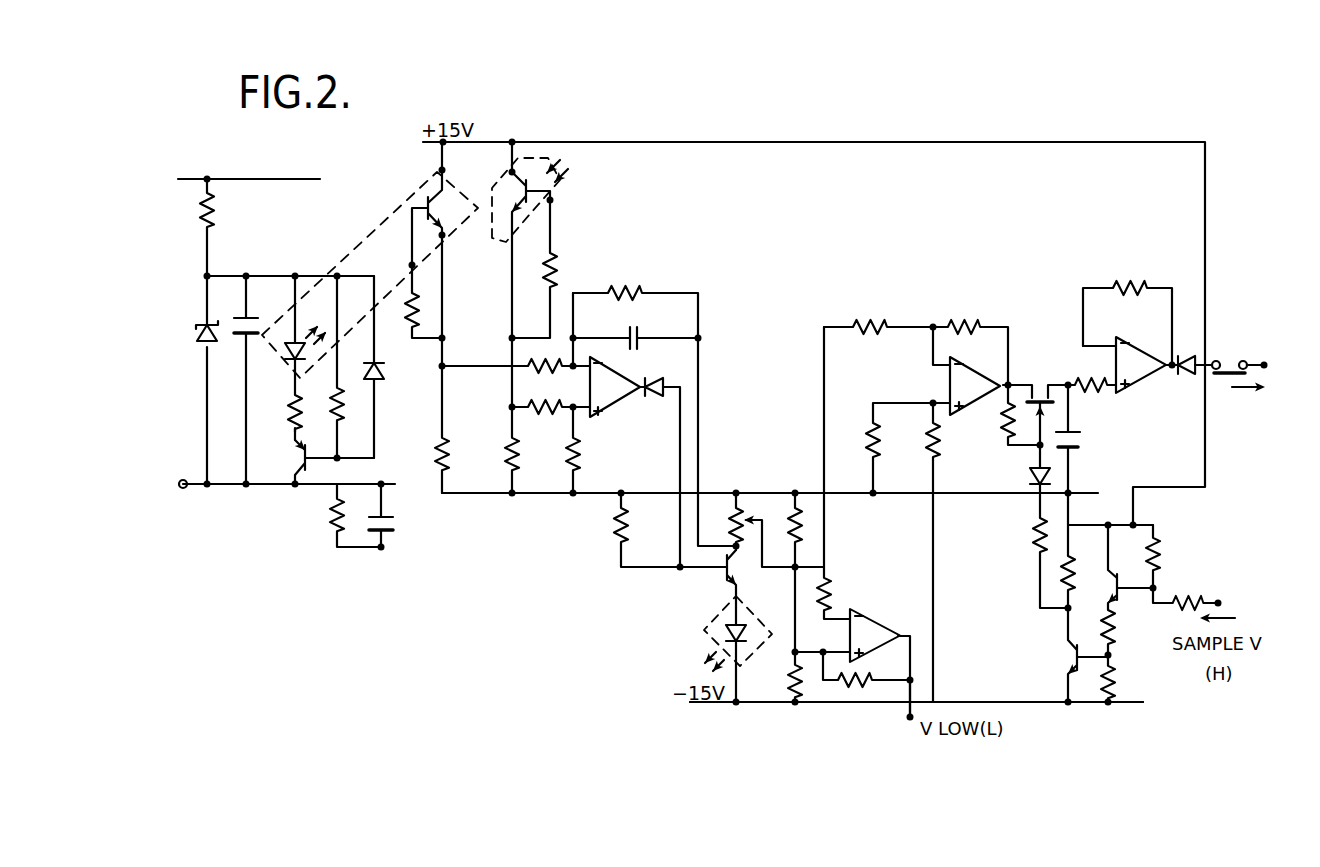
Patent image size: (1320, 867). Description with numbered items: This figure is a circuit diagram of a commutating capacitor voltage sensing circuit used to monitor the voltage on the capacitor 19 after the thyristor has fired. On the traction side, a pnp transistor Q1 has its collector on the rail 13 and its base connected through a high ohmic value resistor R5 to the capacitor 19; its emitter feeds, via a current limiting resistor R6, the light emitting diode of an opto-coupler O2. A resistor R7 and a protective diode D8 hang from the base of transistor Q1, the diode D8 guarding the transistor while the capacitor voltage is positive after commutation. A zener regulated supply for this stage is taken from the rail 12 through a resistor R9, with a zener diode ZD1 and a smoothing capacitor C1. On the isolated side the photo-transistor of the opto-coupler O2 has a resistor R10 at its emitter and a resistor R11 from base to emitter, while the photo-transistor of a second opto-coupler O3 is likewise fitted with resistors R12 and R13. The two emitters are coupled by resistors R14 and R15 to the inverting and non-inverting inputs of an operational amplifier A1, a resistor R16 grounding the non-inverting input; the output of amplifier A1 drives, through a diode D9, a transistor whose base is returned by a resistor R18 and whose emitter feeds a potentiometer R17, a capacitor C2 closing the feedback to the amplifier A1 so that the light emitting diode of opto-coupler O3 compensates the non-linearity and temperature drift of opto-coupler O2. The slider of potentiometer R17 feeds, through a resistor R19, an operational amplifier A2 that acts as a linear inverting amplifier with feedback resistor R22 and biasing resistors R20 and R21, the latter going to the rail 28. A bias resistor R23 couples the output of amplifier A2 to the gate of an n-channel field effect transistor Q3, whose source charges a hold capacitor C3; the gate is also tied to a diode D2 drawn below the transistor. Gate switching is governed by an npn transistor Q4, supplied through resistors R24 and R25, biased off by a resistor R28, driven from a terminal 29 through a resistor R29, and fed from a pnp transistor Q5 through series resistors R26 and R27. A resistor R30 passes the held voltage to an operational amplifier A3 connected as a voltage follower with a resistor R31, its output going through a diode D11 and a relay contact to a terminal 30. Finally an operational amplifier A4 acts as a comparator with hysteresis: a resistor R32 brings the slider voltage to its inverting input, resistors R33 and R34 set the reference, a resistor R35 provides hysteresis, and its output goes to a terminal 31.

The rail 12 is at (259, 177).
The rail 13 is at (236, 488).
The capacitor 19 is at (392, 528).
The rail 28 is at (841, 705).
The terminal 29 is at (1218, 603).
The terminal 30 is at (1265, 363).
The terminal 31 is at (908, 717).
The resistor R9 is at (217, 228).
The zener diode ZD1 is at (213, 322).
The smoothing capacitor C1 is at (255, 318).
The opto-coupler O2 is at (362, 248).
The current limiting resistor R6 is at (290, 424).
The pnp transistor Q1 is at (300, 460).
The resistor R7 is at (340, 384).
The diode D8 is at (383, 375).
The high ohmic value resistor R5 is at (330, 511).
The resistor R11 is at (410, 322).
The resistor R10 is at (430, 462).
The opto-coupler O3 is at (555, 194).
The resistor R13 is at (560, 272).
The resistor R12 is at (505, 458).
The resistor R14 is at (541, 374).
The resistor R15 is at (540, 416).
The resistor R16 is at (581, 456).
The operational amplifier A1 is at (615, 387).
The capacitor C2 is at (639, 337).
The resistor R18 is at (626, 291).
The diode D9 is at (657, 372).
The potentiometer R17 is at (760, 505).
The resistor R33 is at (806, 520).
The resistor R32 is at (833, 590).
The operational amplifier A4 is at (852, 663).
The resistor R35 is at (872, 680).
The resistor R34 is at (790, 672).
The resistor R19 is at (898, 300).
The feedback resistor R22 is at (978, 300).
The resistor R20 is at (866, 430).
The resistor R21 is at (925, 440).
The operational amplifier A2 is at (966, 371).
The bias resistor R23 is at (1003, 417).
The n-channel field effect transistor Q3 is at (1040, 397).
The diode D2 is at (1030, 473).
The capacitor C3 is at (1080, 446).
The resistor R30 is at (1098, 392).
The operational amplifier A3 is at (1124, 365).
The resistor R31 is at (1128, 286).
The diode D11 is at (1186, 377).
The resistor R24 is at (1030, 530).
The resistor R25 is at (1064, 555).
The resistor R28 is at (1190, 533).
The resistor R29 is at (1176, 608).
The pnp transistor Q5 is at (1112, 583).
The resistor R26 is at (1104, 628).
The resistor R27 is at (1115, 676).
The npn transistor Q4 is at (1062, 652).